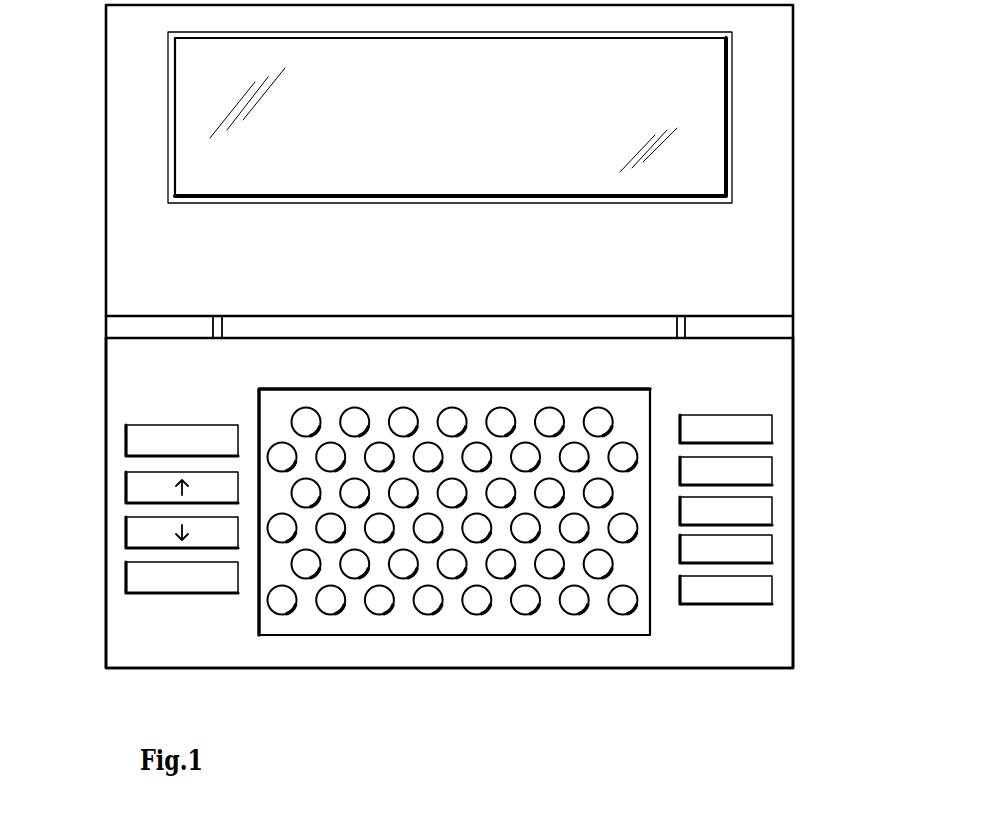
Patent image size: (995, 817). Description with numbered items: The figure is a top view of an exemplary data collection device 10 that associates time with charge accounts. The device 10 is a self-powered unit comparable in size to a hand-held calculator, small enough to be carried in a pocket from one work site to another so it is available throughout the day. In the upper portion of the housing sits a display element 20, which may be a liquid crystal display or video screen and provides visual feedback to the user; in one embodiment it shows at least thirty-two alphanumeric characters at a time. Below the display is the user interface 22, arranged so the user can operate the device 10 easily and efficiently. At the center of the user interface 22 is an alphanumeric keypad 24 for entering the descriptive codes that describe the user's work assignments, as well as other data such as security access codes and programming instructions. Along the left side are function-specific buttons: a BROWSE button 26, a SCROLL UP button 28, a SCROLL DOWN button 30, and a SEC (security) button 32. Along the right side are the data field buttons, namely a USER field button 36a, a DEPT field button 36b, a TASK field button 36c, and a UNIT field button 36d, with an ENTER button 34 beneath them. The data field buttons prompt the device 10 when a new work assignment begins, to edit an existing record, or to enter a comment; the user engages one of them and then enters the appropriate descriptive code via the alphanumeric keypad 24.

The data collection device 10 is at (848, 159).
The display element 20 is at (712, 98).
The user interface 22 is at (563, 662).
The alphanumeric keypad 24 is at (397, 623).
The BROWSE button 26 is at (126, 440).
The SCROLL UP button 28 is at (126, 487).
The SCROLL DOWN button 30 is at (126, 524).
The SEC button 32 is at (126, 572).
The ENTER button 34 is at (772, 587).
The USER field button 36a is at (772, 422).
The DEPT field button 36b is at (772, 467).
The TASK field button 36c is at (772, 499).
The UNIT field button 36d is at (772, 543).